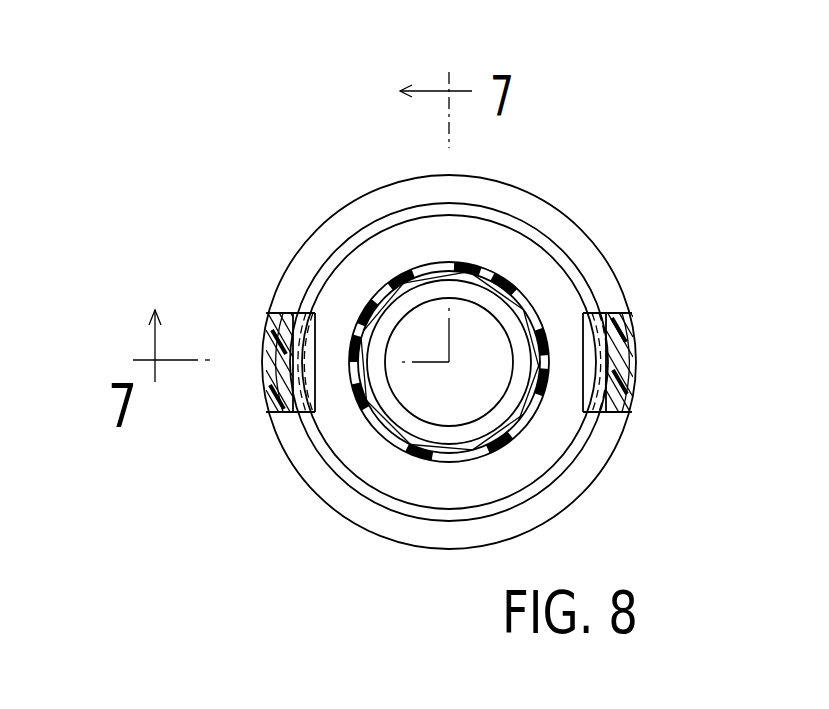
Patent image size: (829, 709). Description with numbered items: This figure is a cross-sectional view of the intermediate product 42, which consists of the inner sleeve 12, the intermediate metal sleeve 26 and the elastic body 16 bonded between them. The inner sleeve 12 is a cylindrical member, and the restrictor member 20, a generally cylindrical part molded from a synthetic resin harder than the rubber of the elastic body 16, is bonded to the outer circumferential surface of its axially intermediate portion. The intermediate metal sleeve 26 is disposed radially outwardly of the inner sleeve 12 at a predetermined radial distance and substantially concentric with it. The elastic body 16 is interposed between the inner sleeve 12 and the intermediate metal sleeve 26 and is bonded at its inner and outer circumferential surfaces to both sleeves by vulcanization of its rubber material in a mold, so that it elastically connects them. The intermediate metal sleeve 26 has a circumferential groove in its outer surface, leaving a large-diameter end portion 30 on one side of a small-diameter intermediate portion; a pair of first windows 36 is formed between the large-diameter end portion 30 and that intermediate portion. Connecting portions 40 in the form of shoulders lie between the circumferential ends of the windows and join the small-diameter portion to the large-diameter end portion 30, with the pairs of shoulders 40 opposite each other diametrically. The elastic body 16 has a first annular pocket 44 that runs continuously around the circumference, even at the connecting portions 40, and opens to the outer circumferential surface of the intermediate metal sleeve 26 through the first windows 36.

The inner sleeve 12 is at (502, 307).
The elastic body 16 is at (448, 379).
The restrictor member 20 is at (398, 270).
The intermediate metal sleeve 26 is at (666, 356).
The large-diameter end portion 30 is at (468, 371).
The first window 36 is at (622, 315).
The connecting portion 40 is at (468, 371).
The intermediate product 42 is at (377, 135).
The first annular pocket 44 is at (367, 428).